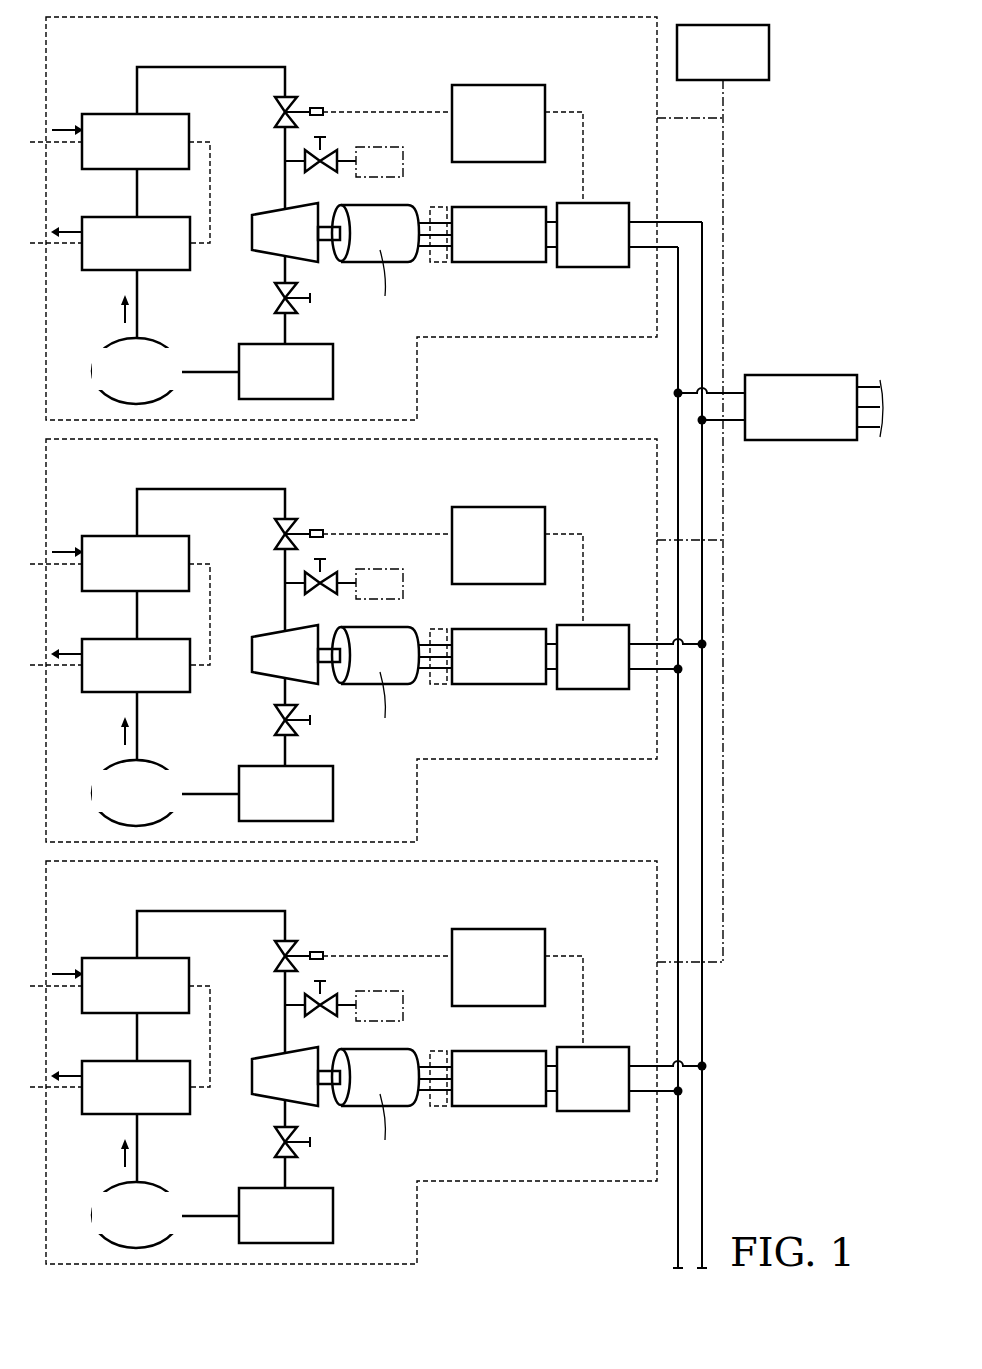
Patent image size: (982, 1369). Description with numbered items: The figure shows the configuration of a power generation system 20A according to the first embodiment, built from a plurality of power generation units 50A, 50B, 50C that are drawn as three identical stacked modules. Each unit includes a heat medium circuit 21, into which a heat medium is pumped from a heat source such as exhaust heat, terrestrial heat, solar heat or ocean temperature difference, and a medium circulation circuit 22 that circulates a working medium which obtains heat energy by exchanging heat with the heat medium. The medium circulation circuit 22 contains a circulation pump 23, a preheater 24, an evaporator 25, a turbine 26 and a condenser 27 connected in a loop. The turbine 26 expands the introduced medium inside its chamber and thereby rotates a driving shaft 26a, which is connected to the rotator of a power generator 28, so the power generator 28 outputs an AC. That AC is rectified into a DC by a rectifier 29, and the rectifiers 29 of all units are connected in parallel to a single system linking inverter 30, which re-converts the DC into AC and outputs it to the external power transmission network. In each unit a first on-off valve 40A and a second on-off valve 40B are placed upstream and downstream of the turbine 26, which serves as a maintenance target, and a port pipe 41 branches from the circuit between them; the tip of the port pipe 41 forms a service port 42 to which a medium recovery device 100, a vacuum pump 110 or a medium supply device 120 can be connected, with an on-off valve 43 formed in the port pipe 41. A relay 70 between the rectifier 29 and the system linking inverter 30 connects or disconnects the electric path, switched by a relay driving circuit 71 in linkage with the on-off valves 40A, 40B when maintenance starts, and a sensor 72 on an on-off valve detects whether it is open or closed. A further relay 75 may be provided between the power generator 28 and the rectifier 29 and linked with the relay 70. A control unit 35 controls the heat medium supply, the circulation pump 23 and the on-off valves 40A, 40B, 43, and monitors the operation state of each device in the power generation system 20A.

The power generation system 20A is at (806, 188).
The heat medium circuit 21 is at (78, 147).
The medium circulation circuit 22 is at (170, 67).
The circulation pump 23 is at (150, 341).
The preheater 24 is at (190, 262).
The evaporator 25 is at (189, 117).
The turbine 26 is at (262, 213).
The driving shaft 26a is at (325, 242).
The condenser 27 is at (313, 344).
The power generator 28 is at (405, 207).
The rectifier 29 is at (500, 207).
The system linking inverter 30 is at (806, 375).
The control unit 35 is at (769, 52).
The first on-off valve 40A is at (274, 106).
The second on-off valve 40B is at (274, 299).
The port pipe 41 is at (297, 163).
The service port 42 is at (345, 163).
The on-off valve 43 is at (328, 152).
The power generation unit 50A is at (417, 383).
The power generation unit 50B is at (351, 640).
The power generation unit 50C is at (351, 1062).
The relay 70 is at (598, 203).
The relay driving circuit 71 is at (528, 85).
The sensor 72 is at (316, 108).
The relay 75 is at (440, 262).
The medium recovery device 100 is at (428, 534).
The vacuum pump 110 is at (428, 534).
The medium supply device 120 is at (378, 147).